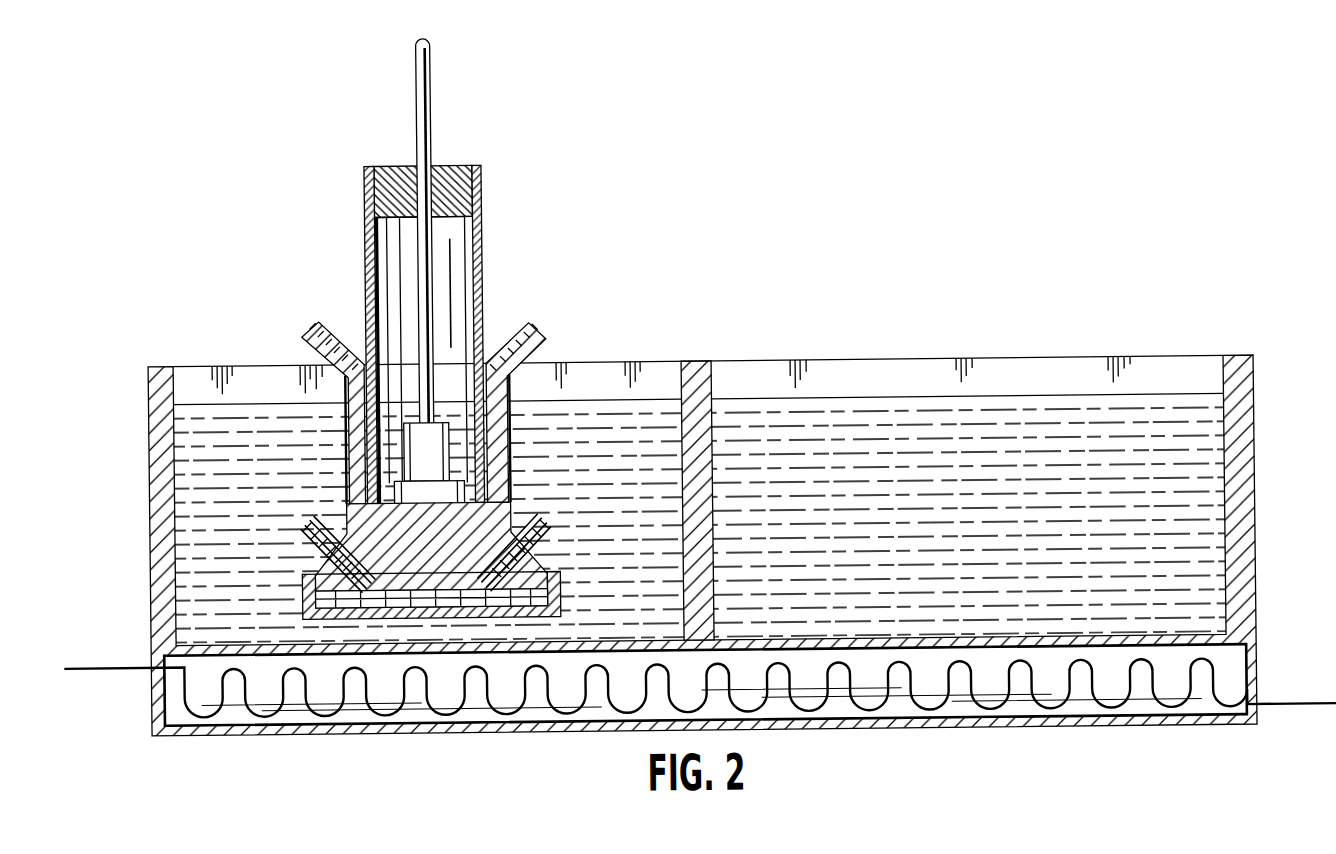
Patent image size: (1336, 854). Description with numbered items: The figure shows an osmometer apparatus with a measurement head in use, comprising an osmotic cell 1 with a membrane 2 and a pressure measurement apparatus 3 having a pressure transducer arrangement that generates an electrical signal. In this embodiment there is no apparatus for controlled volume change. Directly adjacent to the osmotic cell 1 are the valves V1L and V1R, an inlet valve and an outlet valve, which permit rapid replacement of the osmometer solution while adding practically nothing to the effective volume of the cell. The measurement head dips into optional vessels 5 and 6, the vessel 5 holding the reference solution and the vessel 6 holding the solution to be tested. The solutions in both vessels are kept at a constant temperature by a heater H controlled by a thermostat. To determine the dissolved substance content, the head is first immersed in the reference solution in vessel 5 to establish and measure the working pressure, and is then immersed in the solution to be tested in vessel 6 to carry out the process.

The osmotic cell 1 is at (315, 604).
The membrane 2 is at (548, 613).
The pressure measurement apparatus 3 is at (436, 440).
The vessel 5 is at (597, 379).
The vessel 6 is at (769, 379).
The valve V1L is at (306, 532).
The valve V1R is at (553, 545).
The heater H is at (297, 703).